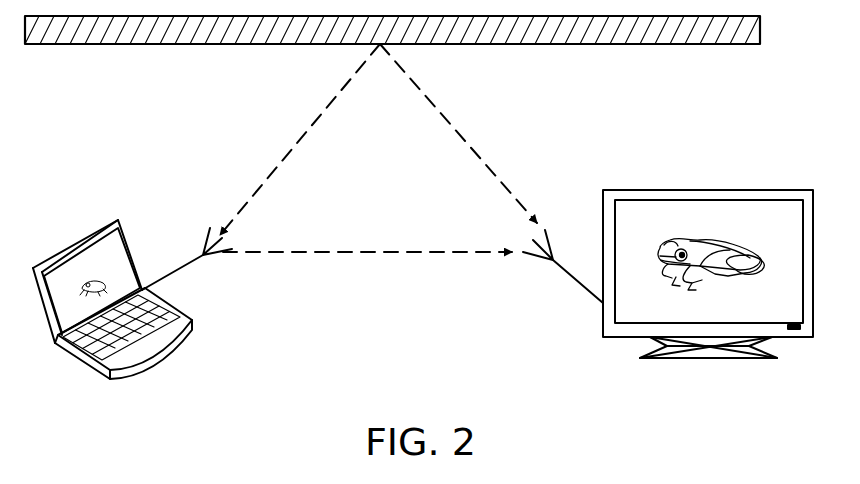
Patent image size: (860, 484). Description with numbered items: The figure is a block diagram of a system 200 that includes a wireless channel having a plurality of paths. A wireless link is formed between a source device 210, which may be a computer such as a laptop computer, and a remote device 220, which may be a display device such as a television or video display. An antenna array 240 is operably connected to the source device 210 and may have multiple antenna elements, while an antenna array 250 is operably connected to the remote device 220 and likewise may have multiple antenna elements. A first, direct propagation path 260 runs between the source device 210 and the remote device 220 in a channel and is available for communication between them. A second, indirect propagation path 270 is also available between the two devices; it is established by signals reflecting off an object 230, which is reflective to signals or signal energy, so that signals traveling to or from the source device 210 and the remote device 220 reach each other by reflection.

The system 200 is at (210, 424).
The source device 210 is at (180, 347).
The remote device 220 is at (659, 190).
The object 230 is at (643, 44).
The antenna array 240 is at (206, 236).
The antenna array 250 is at (550, 240).
The direct propagation path 260 is at (377, 252).
The indirect propagation path 270 is at (485, 163).